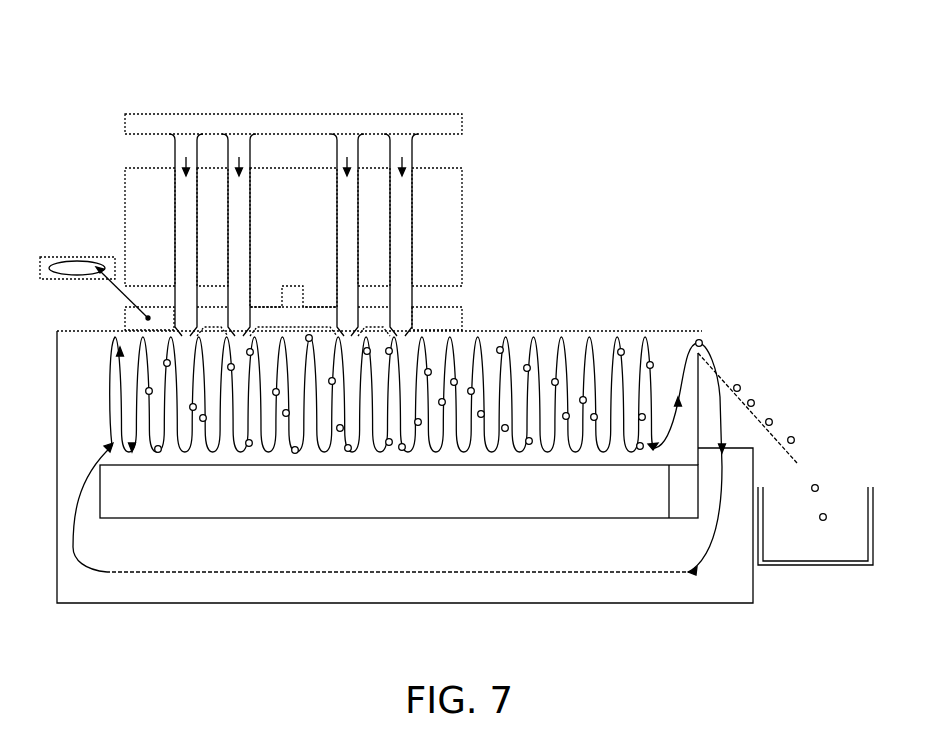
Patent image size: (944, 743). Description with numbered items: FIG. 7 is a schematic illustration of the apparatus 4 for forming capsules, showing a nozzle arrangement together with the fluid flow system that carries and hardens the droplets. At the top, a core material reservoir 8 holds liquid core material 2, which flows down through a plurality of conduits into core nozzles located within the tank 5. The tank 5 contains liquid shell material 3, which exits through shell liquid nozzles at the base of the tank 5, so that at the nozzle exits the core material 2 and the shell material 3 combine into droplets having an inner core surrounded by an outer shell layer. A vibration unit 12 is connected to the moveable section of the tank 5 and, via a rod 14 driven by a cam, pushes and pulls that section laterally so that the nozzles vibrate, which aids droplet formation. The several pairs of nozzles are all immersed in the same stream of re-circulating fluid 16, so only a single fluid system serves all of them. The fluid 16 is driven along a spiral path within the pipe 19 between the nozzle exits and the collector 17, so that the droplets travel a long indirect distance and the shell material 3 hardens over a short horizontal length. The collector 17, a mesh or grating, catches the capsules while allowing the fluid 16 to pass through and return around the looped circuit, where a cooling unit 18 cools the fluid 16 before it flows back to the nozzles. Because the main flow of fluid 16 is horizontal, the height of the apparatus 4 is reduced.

The liquid core material 2 is at (300, 132).
The liquid shell material 3 is at (300, 255).
The apparatus 4 is at (693, 175).
The tank 5 is at (462, 237).
The core material reservoir 8 is at (462, 128).
The vibration unit 12 is at (97, 260).
The rod 14 is at (658, 332).
The fluid 16 is at (390, 592).
The collector 17 is at (777, 433).
The cooling unit 18 is at (390, 500).
The pipe 19 is at (147, 603).